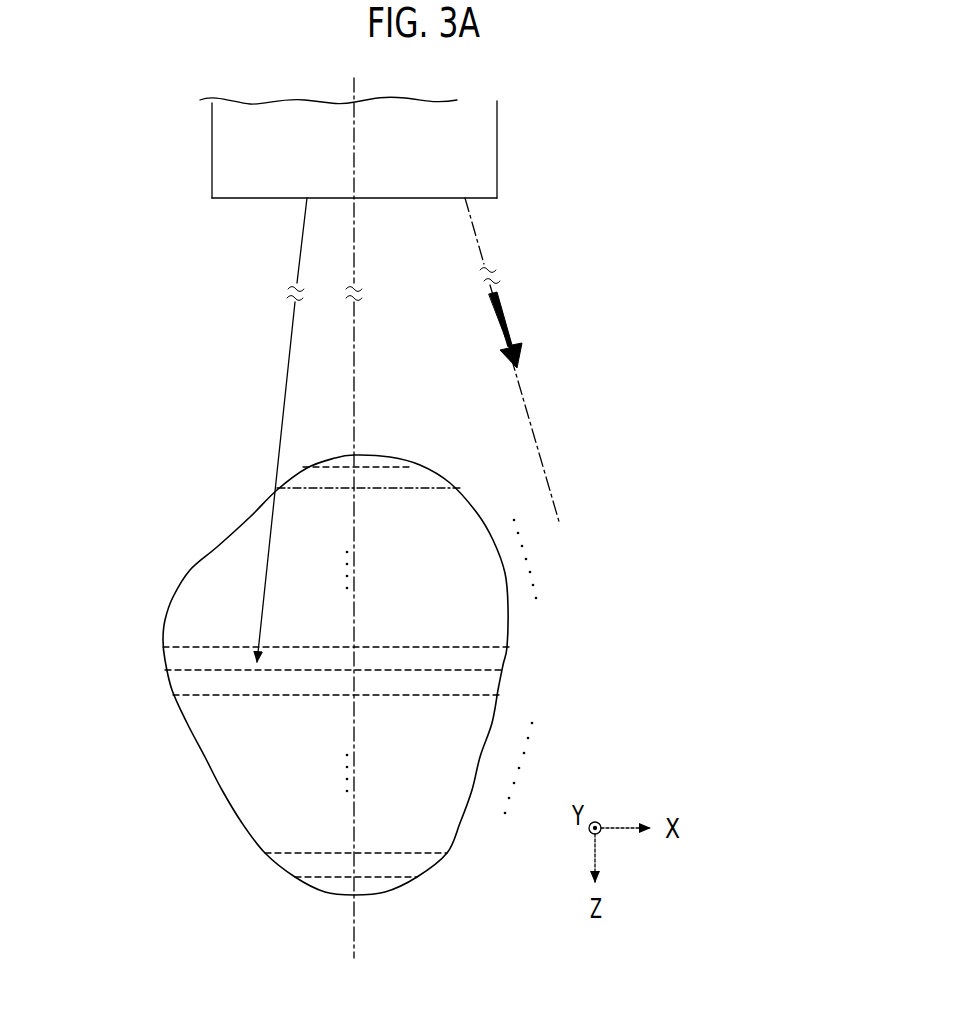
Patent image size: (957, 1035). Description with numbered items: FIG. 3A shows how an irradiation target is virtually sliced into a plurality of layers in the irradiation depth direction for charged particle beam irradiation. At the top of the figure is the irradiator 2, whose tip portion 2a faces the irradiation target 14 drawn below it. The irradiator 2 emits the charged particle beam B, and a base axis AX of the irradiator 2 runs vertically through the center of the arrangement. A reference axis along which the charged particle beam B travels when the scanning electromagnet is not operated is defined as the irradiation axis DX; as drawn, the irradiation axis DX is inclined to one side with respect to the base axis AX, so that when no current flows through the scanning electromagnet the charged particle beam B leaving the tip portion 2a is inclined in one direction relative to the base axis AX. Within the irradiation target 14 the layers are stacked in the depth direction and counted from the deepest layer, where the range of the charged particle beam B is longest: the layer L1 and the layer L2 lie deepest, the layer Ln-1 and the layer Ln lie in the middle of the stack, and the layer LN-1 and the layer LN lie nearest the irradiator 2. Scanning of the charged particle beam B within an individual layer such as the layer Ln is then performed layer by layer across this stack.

The irradiator 2 is at (210, 152).
The tip portion 2a is at (232, 200).
The irradiation region (sample) 14 is at (220, 502).
The charged particle beam B is at (508, 318).
The base axis AX is at (355, 350).
The irradiation axis DX is at (537, 437).
The layer LN is at (362, 463).
The layer LN-1 is at (428, 490).
The layer Ln is at (478, 672).
The layer Ln-1 is at (455, 697).
The layer L2 is at (425, 855).
The layer L1 is at (400, 878).